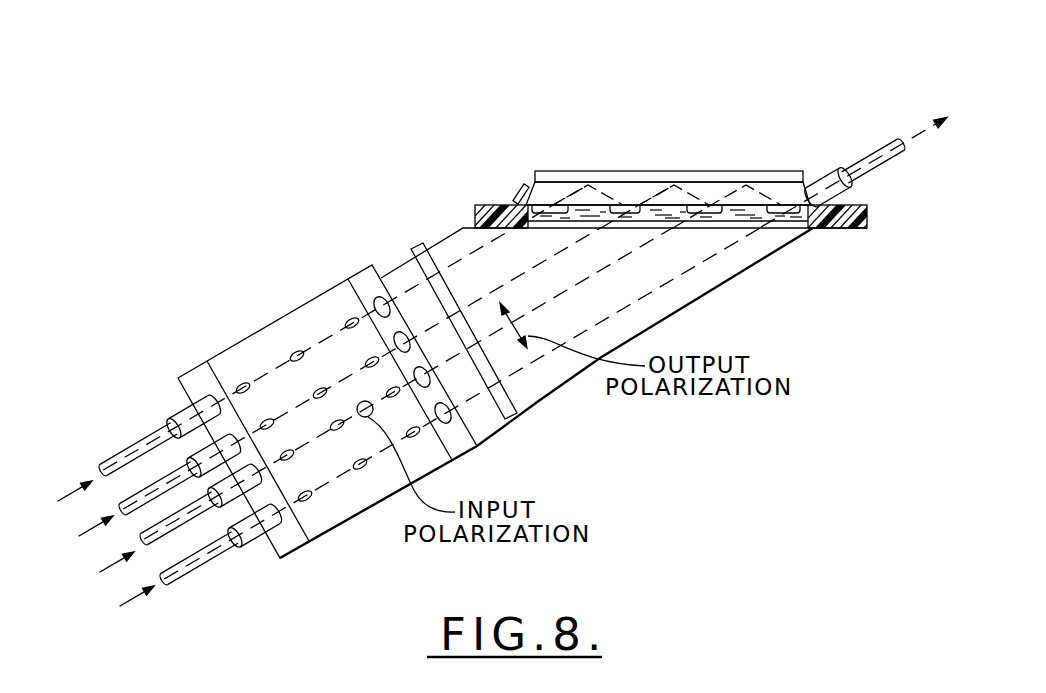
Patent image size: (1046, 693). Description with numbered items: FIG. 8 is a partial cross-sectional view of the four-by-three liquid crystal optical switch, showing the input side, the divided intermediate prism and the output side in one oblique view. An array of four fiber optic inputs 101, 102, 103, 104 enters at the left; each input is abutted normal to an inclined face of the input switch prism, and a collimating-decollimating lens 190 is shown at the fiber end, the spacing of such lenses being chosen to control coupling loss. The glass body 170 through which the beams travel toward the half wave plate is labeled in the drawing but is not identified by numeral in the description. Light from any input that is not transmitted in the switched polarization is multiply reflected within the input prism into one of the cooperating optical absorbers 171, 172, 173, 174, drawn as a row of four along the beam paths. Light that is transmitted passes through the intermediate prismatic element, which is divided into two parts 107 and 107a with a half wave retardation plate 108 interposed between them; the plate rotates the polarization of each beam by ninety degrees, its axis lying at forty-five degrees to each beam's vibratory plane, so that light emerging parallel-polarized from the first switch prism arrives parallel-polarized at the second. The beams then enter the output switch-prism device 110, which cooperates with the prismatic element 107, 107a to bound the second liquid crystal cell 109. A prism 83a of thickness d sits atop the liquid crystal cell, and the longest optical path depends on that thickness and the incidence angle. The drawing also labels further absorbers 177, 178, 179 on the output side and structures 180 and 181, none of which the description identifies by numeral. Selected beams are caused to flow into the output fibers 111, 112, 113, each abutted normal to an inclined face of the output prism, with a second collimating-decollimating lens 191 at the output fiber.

The fiber optic input 101 is at (120, 463).
The fiber optic input 102 is at (165, 477).
The fiber optic input 103 is at (145, 545).
The fiber optic input 104 is at (226, 557).
The collimating-decollimating lens 190 is at (262, 533).
The glass block 170 is at (338, 524).
The optical absorber 171 is at (355, 301).
The optical absorber 172 is at (402, 342).
The optical absorber 173 is at (422, 377).
The optical absorber 174 is at (443, 413).
The half wave retardation plate 108 is at (410, 248).
The intermediate prism part 107 is at (573, 393).
The intermediate prism part 107a is at (538, 389).
The second liquid crystal cell 109 is at (746, 221).
The output switch-prism device 110 is at (647, 159).
The cover plate 181 is at (768, 170).
The prism 83a is at (647, 190).
The absorber 177 is at (514, 179).
The absorber 178 is at (570, 195).
The absorber 179 is at (656, 195).
The polarizer blocks 180 is at (829, 236).
The fiber optic output 111 is at (853, 146).
The fiber optic output 112 is at (849, 175).
The fiber optic output 113 is at (942, 120).
The collimating-decollimating lens 191 is at (828, 187).